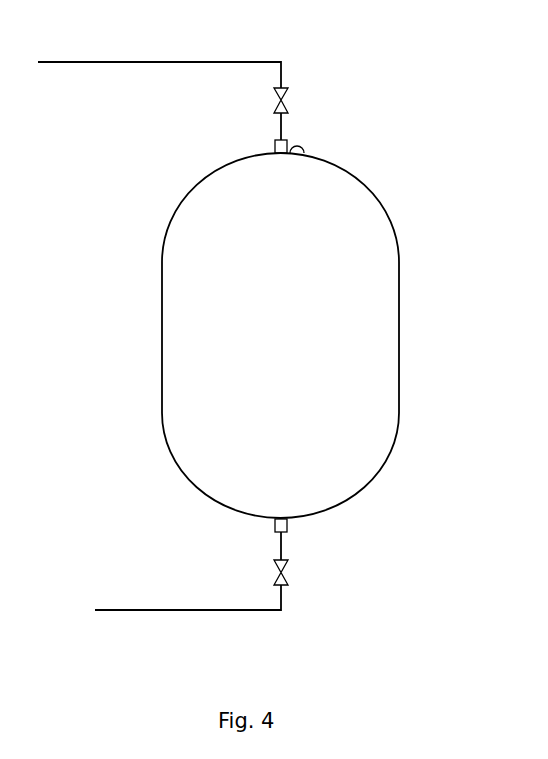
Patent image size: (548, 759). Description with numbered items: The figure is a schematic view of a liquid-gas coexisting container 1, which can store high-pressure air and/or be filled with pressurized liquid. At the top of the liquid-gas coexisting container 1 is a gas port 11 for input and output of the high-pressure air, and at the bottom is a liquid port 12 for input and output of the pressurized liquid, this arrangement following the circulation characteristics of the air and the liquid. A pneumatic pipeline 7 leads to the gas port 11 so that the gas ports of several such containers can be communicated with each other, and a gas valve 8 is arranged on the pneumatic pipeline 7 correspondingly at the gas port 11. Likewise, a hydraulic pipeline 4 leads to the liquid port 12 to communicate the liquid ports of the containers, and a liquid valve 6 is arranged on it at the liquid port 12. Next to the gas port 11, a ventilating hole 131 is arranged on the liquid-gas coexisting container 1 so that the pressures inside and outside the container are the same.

The liquid-gas coexisting container 1 is at (377, 240).
The hydraulic pipeline 4 is at (234, 610).
The liquid valve 6 is at (288, 568).
The pneumatic pipeline 7 is at (283, 62).
The gas valve 8 is at (288, 88).
The gas port 11 is at (275, 140).
The liquid port 12 is at (287, 524).
The ventilating hole 131 is at (298, 144).